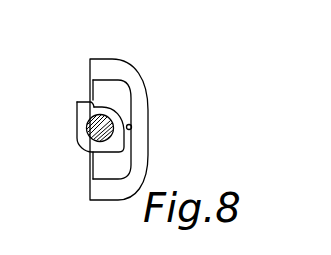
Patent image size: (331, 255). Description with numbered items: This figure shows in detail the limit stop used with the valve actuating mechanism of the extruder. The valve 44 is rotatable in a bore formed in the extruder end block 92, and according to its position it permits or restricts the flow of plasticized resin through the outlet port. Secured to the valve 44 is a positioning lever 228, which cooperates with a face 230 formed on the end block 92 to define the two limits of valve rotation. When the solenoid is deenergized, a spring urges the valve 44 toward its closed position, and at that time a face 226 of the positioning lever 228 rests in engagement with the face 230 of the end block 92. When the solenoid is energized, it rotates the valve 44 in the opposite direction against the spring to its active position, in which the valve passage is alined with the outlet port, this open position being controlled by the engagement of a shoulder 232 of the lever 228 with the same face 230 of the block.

The end block 92 is at (117, 72).
The face 226 is at (131, 148).
The positioning lever 228 is at (83, 148).
The shoulder 232 is at (78, 101).
The valve 44 is at (113, 122).
The face 230 is at (132, 127).